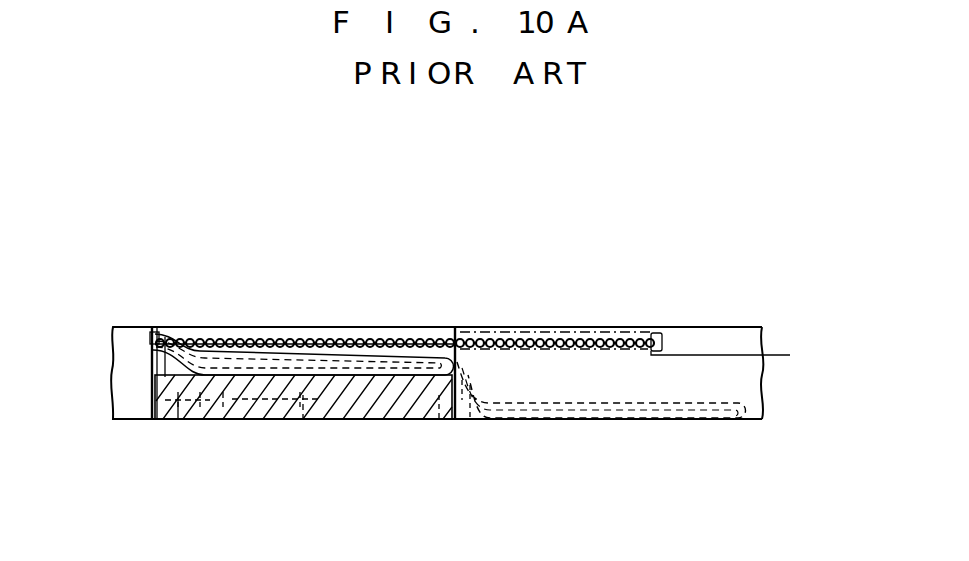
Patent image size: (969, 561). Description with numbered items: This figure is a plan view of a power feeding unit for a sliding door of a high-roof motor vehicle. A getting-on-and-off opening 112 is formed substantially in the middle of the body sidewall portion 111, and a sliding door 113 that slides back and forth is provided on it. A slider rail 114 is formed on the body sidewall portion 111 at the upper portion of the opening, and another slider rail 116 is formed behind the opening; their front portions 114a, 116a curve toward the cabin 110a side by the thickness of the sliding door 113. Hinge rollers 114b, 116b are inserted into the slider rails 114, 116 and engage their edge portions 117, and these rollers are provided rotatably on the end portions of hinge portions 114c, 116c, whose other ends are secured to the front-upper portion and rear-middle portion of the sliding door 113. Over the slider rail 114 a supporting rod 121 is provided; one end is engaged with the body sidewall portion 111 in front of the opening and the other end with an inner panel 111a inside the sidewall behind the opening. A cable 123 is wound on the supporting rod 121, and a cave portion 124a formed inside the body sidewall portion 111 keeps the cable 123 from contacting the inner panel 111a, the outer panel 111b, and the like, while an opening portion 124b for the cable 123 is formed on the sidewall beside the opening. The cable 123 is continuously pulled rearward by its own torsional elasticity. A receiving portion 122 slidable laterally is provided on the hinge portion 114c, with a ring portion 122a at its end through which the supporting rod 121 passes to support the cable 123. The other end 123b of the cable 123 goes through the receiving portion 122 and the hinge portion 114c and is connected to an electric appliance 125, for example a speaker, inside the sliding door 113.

The cabin 110a is at (352, 184).
The body sidewall portion 111 is at (648, 268).
The inner panel 111a is at (681, 328).
The outer panel 111b is at (713, 421).
The getting-on-and-off opening 112 is at (162, 420).
The sliding door 113 is at (338, 420).
The slider rail 114 is at (387, 368).
The front portion of slider rail 114a is at (225, 345).
The hinge roller 114b is at (163, 330).
The hinge portion 114c is at (153, 367).
The slider rail 116 is at (658, 420).
The front portion of slider rail 116a is at (466, 420).
The hinge roller 116b is at (441, 420).
The hinge portion 116c is at (470, 420).
The edge portions of slider rails 117 is at (342, 368).
The supporting rod 121 is at (382, 337).
The receiving portion 122 is at (178, 420).
The ring portion 122a is at (160, 345).
The cable 123 is at (407, 336).
The other end of cable 123b is at (232, 420).
The cave portion 124a is at (545, 333).
The opening portion 124b is at (450, 330).
The electric appliance 125 is at (303, 420).